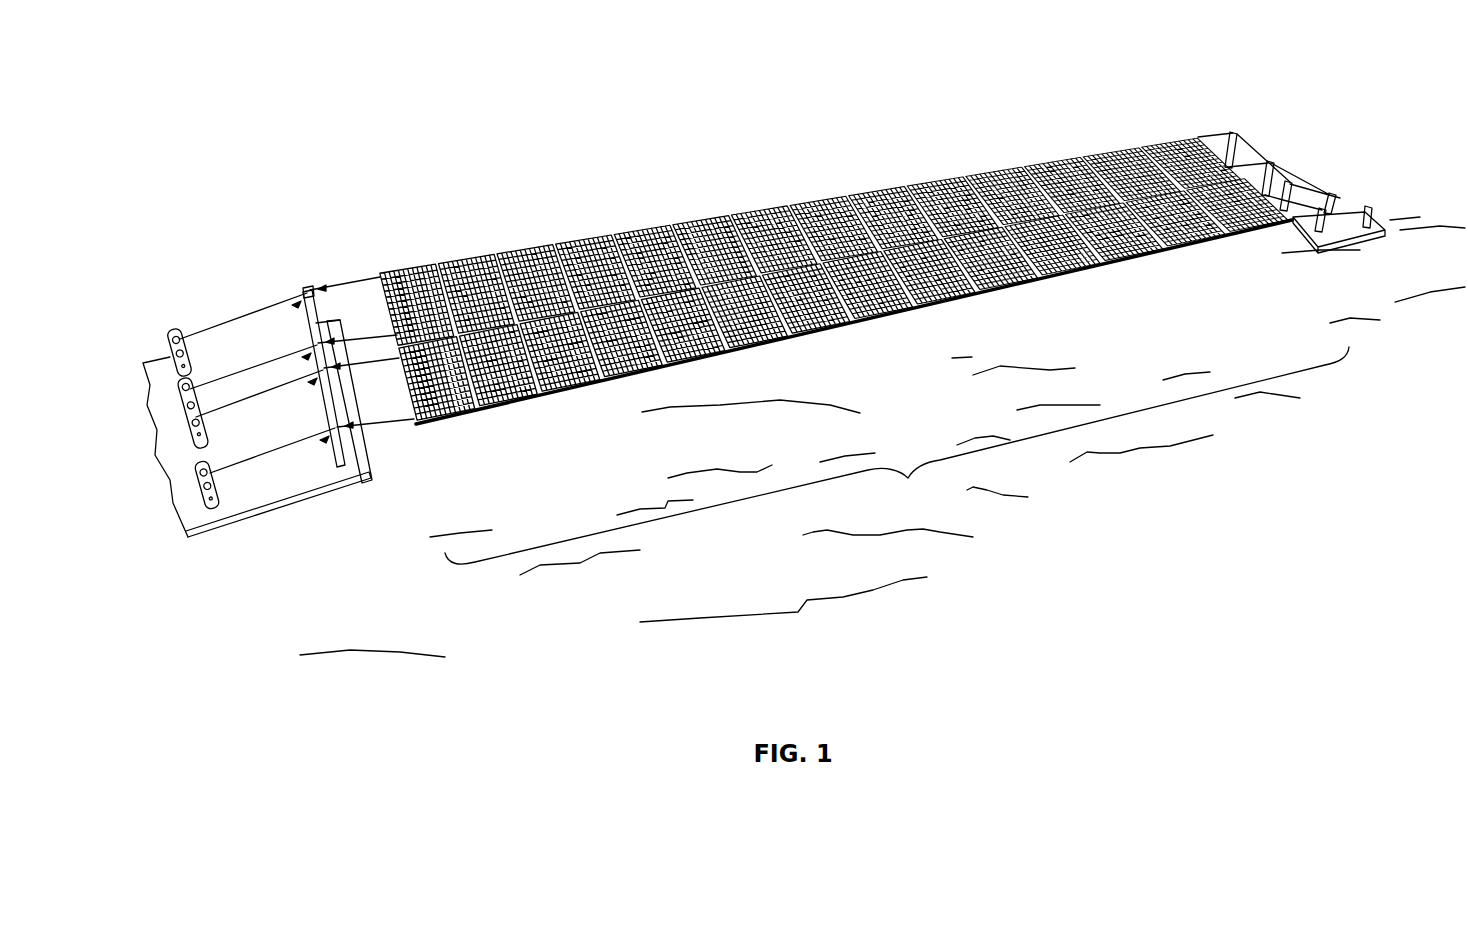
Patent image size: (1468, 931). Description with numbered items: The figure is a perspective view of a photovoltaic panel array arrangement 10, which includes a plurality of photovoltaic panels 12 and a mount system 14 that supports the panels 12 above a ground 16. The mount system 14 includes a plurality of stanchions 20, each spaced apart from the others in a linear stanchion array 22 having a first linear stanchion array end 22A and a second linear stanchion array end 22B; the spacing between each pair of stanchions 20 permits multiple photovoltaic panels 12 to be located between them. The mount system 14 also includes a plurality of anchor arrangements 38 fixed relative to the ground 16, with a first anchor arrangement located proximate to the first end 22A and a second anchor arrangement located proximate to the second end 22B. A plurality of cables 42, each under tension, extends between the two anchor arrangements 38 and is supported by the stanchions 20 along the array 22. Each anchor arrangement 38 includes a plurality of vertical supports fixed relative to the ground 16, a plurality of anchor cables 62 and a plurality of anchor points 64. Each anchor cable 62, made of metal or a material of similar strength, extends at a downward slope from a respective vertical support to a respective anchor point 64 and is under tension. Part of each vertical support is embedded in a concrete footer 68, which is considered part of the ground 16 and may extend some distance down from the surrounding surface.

The photovoltaic panel array arrangement 10 is at (776, 372).
The photovoltaic panels 12 is at (850, 207).
The mount system 14 is at (298, 266).
The ground 16 is at (706, 591).
The stanchions 20 is at (820, 330).
The linear stanchion array 22 is at (919, 473).
The first linear stanchion array end 22A is at (490, 598).
The second linear stanchion array end 22B is at (1348, 403).
The anchor arrangements 38 is at (342, 517).
The cables 42 is at (322, 293).
The anchor cables 62 is at (253, 320).
The anchor points 64 is at (168, 352).
The concrete footer 68 is at (307, 478).